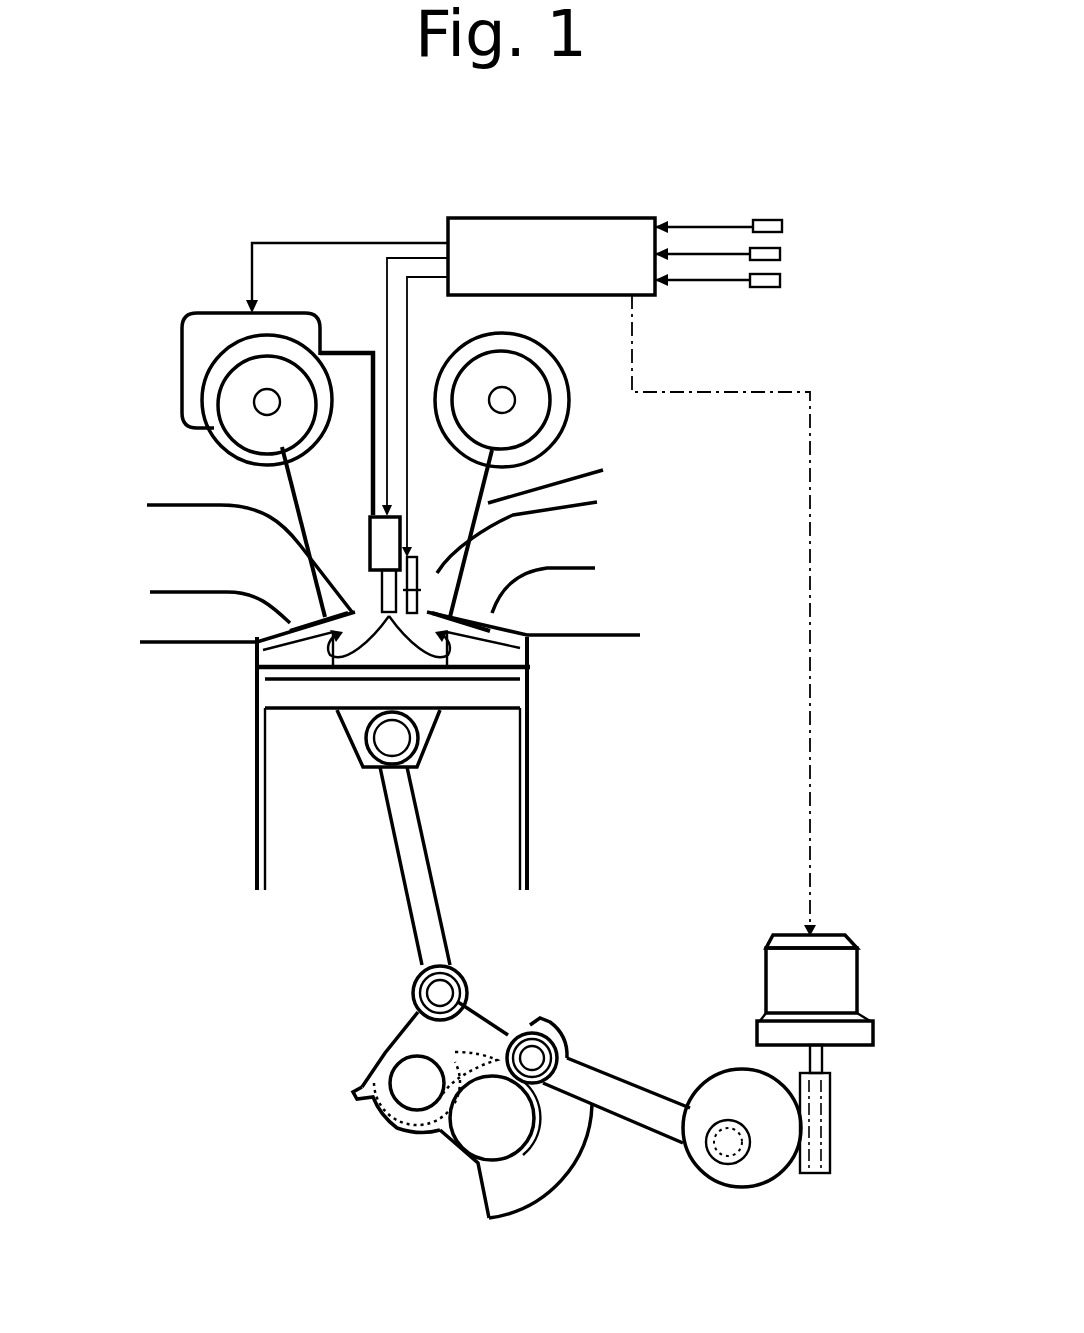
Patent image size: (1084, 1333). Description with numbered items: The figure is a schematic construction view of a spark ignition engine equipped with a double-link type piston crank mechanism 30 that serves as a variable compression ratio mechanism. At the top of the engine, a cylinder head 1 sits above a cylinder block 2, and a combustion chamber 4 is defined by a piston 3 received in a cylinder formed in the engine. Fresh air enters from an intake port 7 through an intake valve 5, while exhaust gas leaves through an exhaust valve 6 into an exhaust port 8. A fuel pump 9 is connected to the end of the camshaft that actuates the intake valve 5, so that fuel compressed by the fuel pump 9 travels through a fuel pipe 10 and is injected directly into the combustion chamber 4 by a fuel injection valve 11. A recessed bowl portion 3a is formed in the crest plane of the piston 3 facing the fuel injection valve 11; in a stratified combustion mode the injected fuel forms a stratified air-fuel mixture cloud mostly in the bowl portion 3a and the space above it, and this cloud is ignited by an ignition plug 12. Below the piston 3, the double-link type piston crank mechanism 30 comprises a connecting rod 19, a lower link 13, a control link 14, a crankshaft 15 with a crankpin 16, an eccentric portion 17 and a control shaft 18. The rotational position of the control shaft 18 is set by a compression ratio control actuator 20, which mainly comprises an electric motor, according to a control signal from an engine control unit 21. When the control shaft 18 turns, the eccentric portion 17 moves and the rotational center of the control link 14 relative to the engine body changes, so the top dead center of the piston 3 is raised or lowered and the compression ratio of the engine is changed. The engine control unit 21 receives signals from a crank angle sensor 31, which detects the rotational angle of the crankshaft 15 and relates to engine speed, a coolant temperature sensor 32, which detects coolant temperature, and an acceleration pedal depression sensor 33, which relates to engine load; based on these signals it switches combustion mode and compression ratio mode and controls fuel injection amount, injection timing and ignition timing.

The cylinder head 1 is at (178, 623).
The cylinder block 2 is at (180, 696).
The piston 3 is at (275, 735).
The bowl portion 3a is at (520, 672).
The combustion chamber 4 is at (510, 623).
The intake valve 5 is at (280, 487).
The exhaust valve 6 is at (500, 483).
The intake port 7 is at (190, 548).
The exhaust port 8 is at (515, 565).
The fuel pump 9 is at (185, 361).
The fuel pipe 10 is at (340, 350).
The fuel injection valve 11 is at (362, 528).
The ignition plug 12 is at (421, 560).
The lower link 13 is at (475, 1043).
The control link 14 is at (618, 1095).
The crankshaft 15 is at (531, 1188).
The crankpin 16 is at (355, 1092).
The eccentric portion 17 is at (703, 1170).
The control shaft 18 is at (765, 1128).
The connecting rod 19 is at (405, 903).
The compression ratio control actuator 20 is at (870, 989).
The engine control unit 21 is at (606, 230).
The double-link type piston crank mechanism 30 is at (258, 1060).
The crank angle sensor 31 is at (790, 229).
The coolant temperature sensor 32 is at (786, 259).
The acceleration pedal depression sensor 33 is at (784, 288).